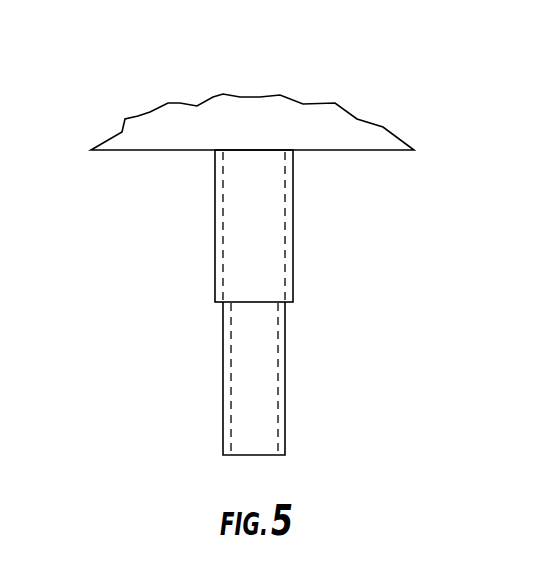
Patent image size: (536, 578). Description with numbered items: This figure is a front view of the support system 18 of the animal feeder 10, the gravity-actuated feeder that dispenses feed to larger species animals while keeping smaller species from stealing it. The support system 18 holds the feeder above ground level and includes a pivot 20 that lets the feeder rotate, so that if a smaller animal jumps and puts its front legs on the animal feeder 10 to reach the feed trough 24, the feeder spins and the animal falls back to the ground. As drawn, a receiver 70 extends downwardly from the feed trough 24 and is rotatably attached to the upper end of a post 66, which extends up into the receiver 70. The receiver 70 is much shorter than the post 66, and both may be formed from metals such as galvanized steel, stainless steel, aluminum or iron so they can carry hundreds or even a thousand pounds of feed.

The animal feeder 10 is at (272, 239).
The feed trough 24 is at (218, 109).
The support system 18 is at (272, 216).
The receiver 70 is at (215, 207).
The pivot 20 is at (358, 352).
The post 66 is at (285, 372).